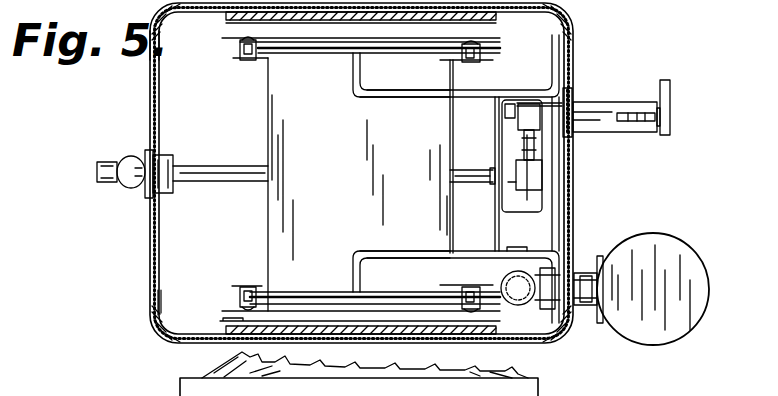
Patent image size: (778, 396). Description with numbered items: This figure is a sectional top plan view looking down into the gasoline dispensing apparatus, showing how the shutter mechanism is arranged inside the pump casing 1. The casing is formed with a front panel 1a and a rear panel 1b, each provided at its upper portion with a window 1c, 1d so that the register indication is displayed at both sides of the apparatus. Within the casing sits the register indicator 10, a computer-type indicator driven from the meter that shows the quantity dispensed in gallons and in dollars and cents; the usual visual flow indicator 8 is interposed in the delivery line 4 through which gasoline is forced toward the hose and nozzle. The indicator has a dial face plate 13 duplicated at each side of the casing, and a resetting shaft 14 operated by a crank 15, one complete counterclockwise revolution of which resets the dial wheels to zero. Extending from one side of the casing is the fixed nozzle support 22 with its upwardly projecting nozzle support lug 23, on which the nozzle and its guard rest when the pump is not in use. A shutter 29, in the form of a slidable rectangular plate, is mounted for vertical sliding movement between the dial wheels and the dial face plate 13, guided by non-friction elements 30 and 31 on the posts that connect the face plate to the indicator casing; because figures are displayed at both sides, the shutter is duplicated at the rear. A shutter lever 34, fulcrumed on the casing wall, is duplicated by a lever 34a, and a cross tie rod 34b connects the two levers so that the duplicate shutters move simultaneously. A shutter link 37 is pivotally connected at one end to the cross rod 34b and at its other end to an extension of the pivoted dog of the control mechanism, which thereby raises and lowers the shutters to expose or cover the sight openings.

The pump casing 1 is at (150, 325).
The front panel 1a is at (183, 346).
The rear panel 1b is at (192, 14).
The window 1c is at (227, 344).
The window 1d is at (222, 29).
The delivery line 4 is at (518, 296).
The visual flow indicator 8 is at (637, 331).
The register indicator 10 is at (271, 214).
The dial face plate 13 is at (493, 41).
The resetting shaft 14 is at (200, 167).
The crank 15 is at (111, 163).
The nozzle support 22 is at (609, 131).
The nozzle support lug 23 is at (622, 109).
The shutter 29 is at (396, 52).
The non-friction element 30 is at (258, 58).
The non-friction element 31 is at (485, 53).
The shutter lever 34 is at (417, 256).
The shutter lever 34a is at (392, 98).
The cross tie rod 34b is at (497, 234).
The shutter link 37 is at (512, 209).